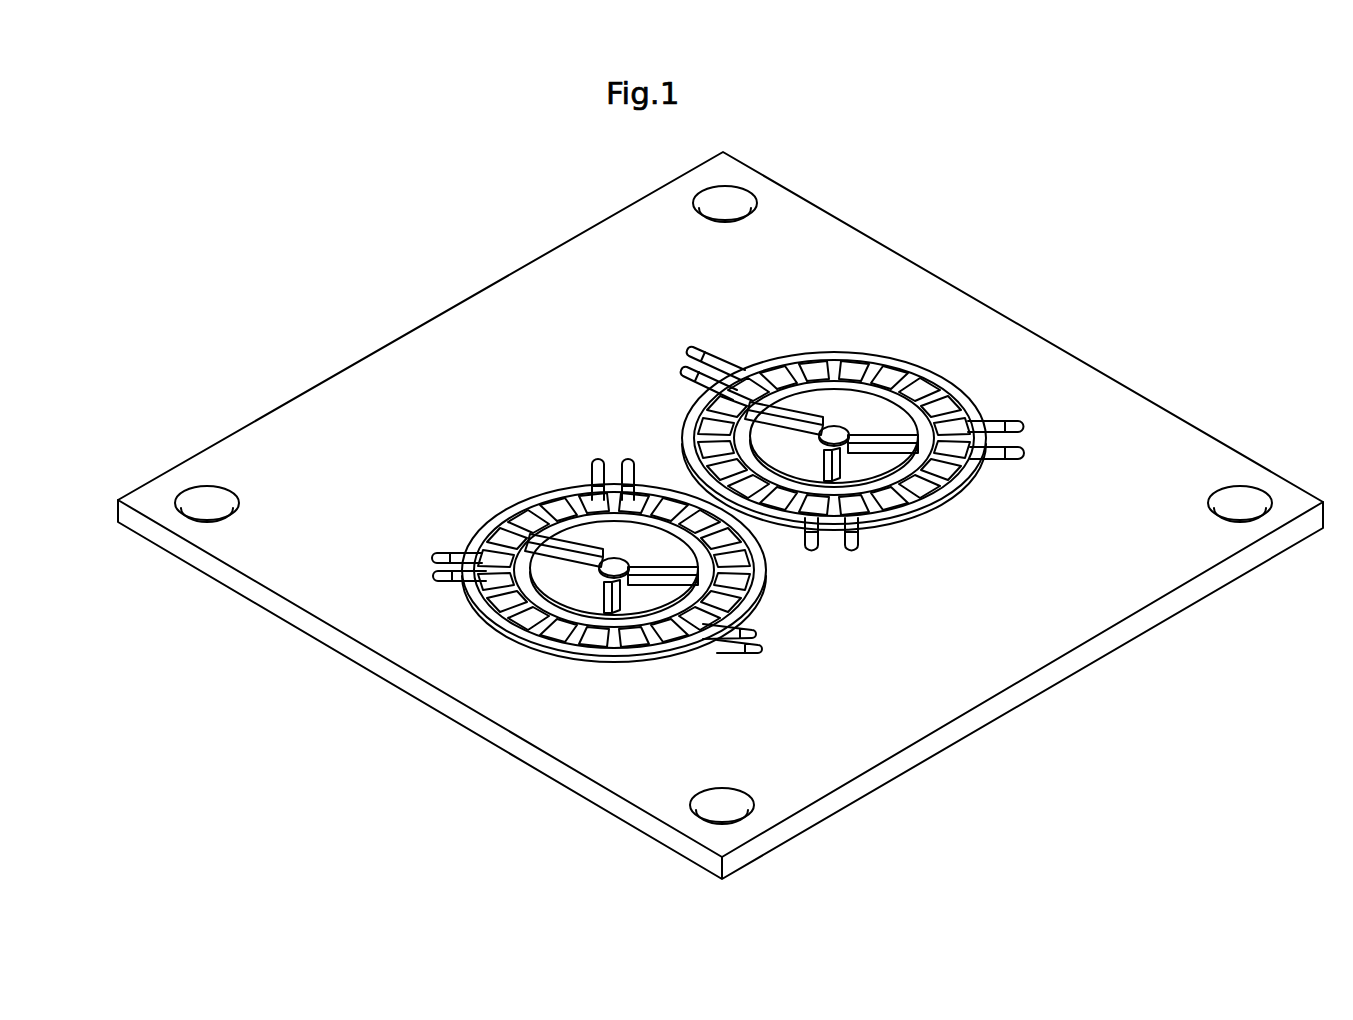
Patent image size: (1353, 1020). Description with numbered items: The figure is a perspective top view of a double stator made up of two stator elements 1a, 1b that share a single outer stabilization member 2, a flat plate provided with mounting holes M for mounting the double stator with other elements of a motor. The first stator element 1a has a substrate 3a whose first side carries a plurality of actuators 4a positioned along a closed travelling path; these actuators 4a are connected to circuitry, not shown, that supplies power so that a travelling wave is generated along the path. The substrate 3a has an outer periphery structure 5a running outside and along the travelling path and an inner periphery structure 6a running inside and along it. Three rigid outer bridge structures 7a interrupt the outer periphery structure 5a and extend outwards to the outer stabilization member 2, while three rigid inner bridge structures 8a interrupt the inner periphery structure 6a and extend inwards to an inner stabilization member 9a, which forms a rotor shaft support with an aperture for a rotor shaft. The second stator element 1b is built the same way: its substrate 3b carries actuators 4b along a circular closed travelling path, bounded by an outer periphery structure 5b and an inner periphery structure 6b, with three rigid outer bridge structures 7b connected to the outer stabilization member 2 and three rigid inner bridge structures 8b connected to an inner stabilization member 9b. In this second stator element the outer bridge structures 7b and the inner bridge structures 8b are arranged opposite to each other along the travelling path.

The first stator element 1a is at (584, 642).
The second stator element 1b is at (813, 431).
The outer stabilization member 2 is at (465, 333).
The substrate 3a is at (500, 585).
The substrate 3b is at (783, 383).
The actuators 4a is at (593, 627).
The actuators 4b is at (900, 492).
The outer periphery structure 5a is at (478, 516).
The outer periphery structure 5b is at (678, 415).
The inner periphery structure 6a is at (763, 587).
The inner periphery structure 6b is at (972, 485).
The rigid outer bridge structures 7a is at (432, 557).
The rigid outer bridge structures 7b is at (707, 363).
The rigid inner bridge structures 8a is at (565, 545).
The rigid inner bridge structures 8b is at (888, 437).
The inner stabilization member 9a is at (630, 590).
The inner stabilization member 9b is at (842, 418).
The mounting holes M is at (183, 514).